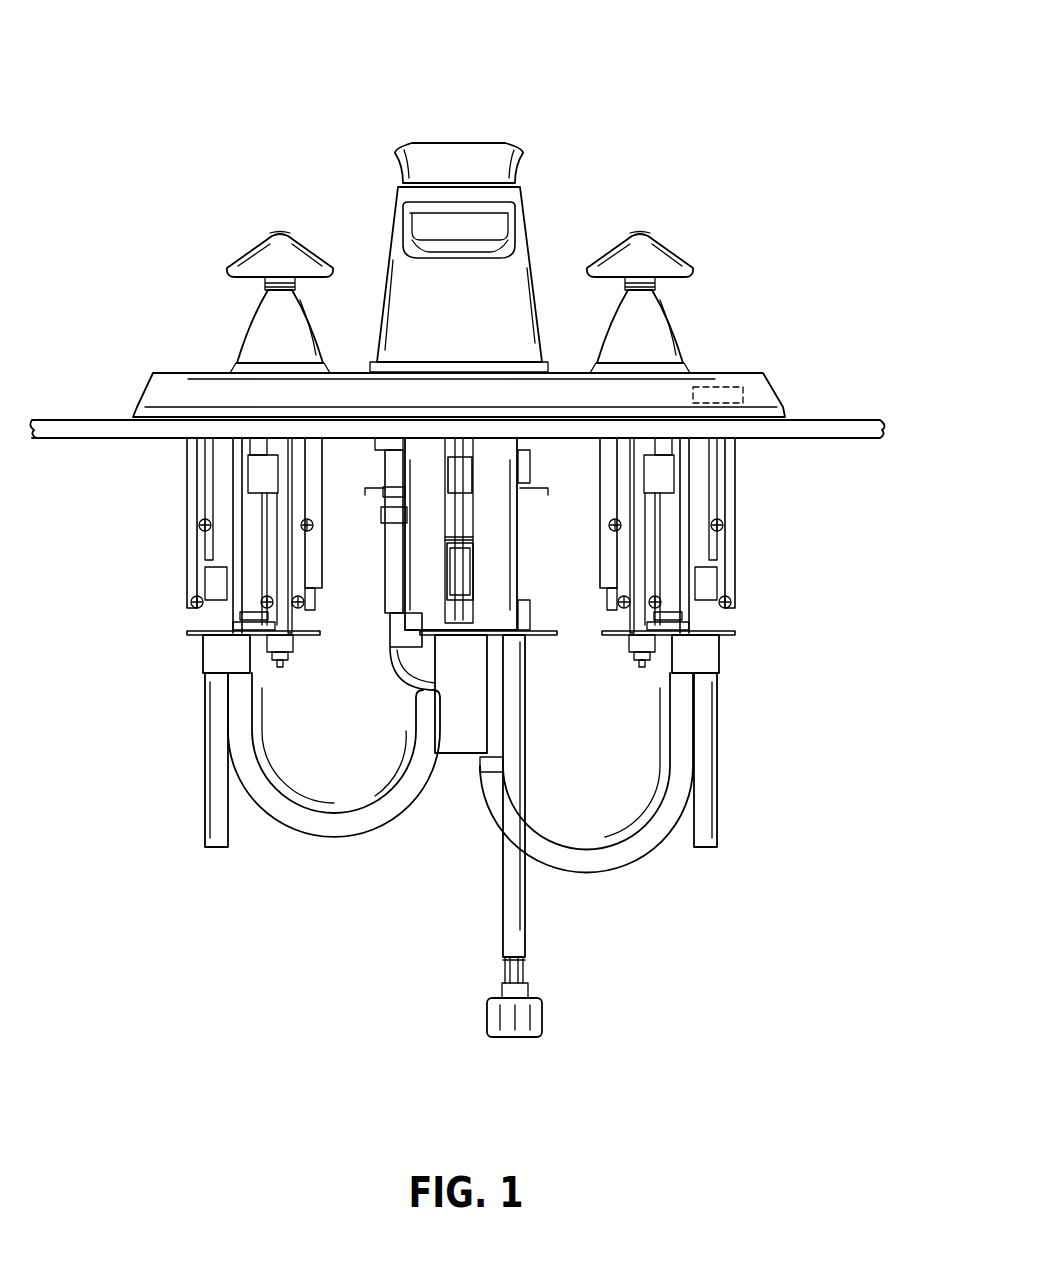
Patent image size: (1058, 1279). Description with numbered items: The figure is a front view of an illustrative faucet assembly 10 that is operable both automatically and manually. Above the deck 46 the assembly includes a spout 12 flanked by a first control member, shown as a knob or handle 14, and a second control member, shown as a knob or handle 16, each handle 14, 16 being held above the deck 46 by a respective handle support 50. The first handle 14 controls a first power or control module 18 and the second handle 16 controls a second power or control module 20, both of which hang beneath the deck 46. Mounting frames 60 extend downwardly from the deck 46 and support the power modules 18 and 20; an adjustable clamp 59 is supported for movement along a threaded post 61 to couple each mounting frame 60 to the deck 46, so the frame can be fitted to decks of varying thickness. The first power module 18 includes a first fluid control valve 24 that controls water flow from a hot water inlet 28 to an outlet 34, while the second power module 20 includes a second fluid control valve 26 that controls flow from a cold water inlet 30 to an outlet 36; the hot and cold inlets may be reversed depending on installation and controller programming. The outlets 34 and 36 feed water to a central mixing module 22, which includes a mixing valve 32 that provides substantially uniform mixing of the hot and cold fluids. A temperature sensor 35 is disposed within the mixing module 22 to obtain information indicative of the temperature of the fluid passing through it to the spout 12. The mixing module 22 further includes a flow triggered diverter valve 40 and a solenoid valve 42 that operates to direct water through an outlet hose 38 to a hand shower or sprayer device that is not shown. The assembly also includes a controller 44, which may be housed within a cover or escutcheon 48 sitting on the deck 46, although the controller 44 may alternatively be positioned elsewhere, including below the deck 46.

The faucet assembly 10 is at (748, 102).
The spout 12 is at (513, 232).
The handle 14 is at (442, 277).
The handle 16 is at (660, 258).
The first power module 18 is at (427, 563).
The second power module 20 is at (729, 555).
The mixing module 22 is at (441, 650).
The first fluid control valve 24 is at (218, 653).
The second fluid control valve 26 is at (697, 653).
The hot water inlet 28 is at (207, 810).
The cold water inlet 30 is at (712, 800).
The mixing valve 32 is at (460, 737).
The outlet 34 is at (333, 827).
The temperature sensor 35 is at (375, 450).
The outlet 36 is at (583, 865).
The outlet hose 38 is at (503, 905).
The flow triggered diverter valve 40 is at (470, 513).
The solenoid valve 42 is at (470, 570).
The controller 44 is at (752, 395).
The deck 46 is at (858, 433).
The escutcheon 48 is at (752, 370).
The handle support 50 is at (258, 337).
The adjustable clamp 59 is at (258, 478).
The mounting frame 60 is at (282, 617).
The threaded post 61 is at (250, 445).